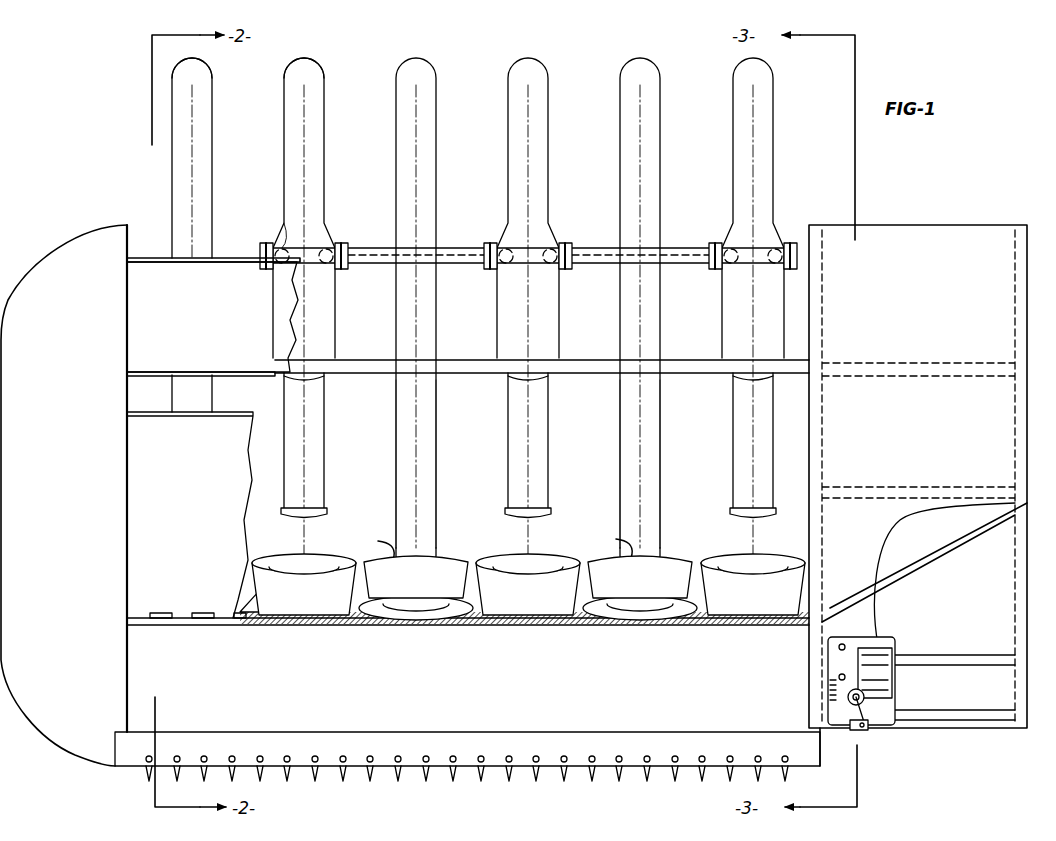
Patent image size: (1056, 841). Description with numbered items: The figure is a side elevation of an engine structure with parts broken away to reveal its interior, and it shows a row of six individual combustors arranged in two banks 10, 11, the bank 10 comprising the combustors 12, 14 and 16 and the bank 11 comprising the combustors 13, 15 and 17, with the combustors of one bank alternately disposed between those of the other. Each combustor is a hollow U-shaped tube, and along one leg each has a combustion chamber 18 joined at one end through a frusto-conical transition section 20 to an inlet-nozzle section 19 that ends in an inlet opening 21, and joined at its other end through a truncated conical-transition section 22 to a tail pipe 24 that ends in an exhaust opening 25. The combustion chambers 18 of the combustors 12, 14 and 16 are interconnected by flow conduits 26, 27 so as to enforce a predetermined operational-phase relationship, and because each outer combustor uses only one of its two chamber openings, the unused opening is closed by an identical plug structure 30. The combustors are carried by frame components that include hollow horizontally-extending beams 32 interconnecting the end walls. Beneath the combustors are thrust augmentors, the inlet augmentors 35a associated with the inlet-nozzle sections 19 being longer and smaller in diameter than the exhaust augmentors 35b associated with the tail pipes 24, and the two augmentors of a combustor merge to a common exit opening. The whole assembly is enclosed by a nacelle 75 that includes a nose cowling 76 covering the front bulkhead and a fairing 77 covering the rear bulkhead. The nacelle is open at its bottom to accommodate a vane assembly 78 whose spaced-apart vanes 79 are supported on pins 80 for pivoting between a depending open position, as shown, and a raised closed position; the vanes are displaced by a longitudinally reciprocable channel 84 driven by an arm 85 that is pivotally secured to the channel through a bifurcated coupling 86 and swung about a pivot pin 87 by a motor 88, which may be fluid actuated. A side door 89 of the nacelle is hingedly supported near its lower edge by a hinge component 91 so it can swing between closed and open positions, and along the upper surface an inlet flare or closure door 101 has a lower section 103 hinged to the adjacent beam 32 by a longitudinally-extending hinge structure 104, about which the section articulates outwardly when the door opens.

The bank of combustors 10 is at (333, 63).
The bank of combustors 11 is at (222, 68).
The combustor 12 is at (318, 108).
The combustor 13 is at (206, 108).
The combustor 14 is at (540, 105).
The combustor 15 is at (430, 103).
The combustor 16 is at (762, 118).
The combustor 17 is at (652, 127).
The combustion chamber 18 is at (334, 311).
The inlet-nozzle section 19 is at (318, 443).
The transition section 20 is at (320, 380).
The inlet opening 21 is at (325, 512).
The truncated conical-transition section 22 is at (283, 228).
The tail pipe 24 is at (436, 484).
The exhaust opening 25 is at (492, 545).
The flow conduit 26 is at (362, 250).
The flow conduit 27 is at (590, 250).
The plug structure 30 is at (262, 252).
The horizontally-extending beam 32 is at (682, 376).
The inlet augmentor 35a is at (244, 570).
The exhaust augmentor 35b is at (248, 628).
The nacelle 75 is at (92, 222).
The nose cowling 76 is at (36, 262).
The fairing 77 is at (935, 228).
The vane assembly 78 is at (478, 736).
The vanes 79 is at (422, 778).
The pins 80 is at (318, 756).
The channel 84 is at (838, 736).
The arm 85 is at (870, 698).
The bifurcated coupling 86 is at (860, 732).
The pivot pin 87 is at (875, 688).
The motor 88 is at (860, 640).
The door 89 is at (130, 513).
The hinge component 91 is at (168, 615).
The closure door 101 is at (150, 288).
The lower section 103 is at (135, 330).
The hinge structure 104 is at (137, 378).